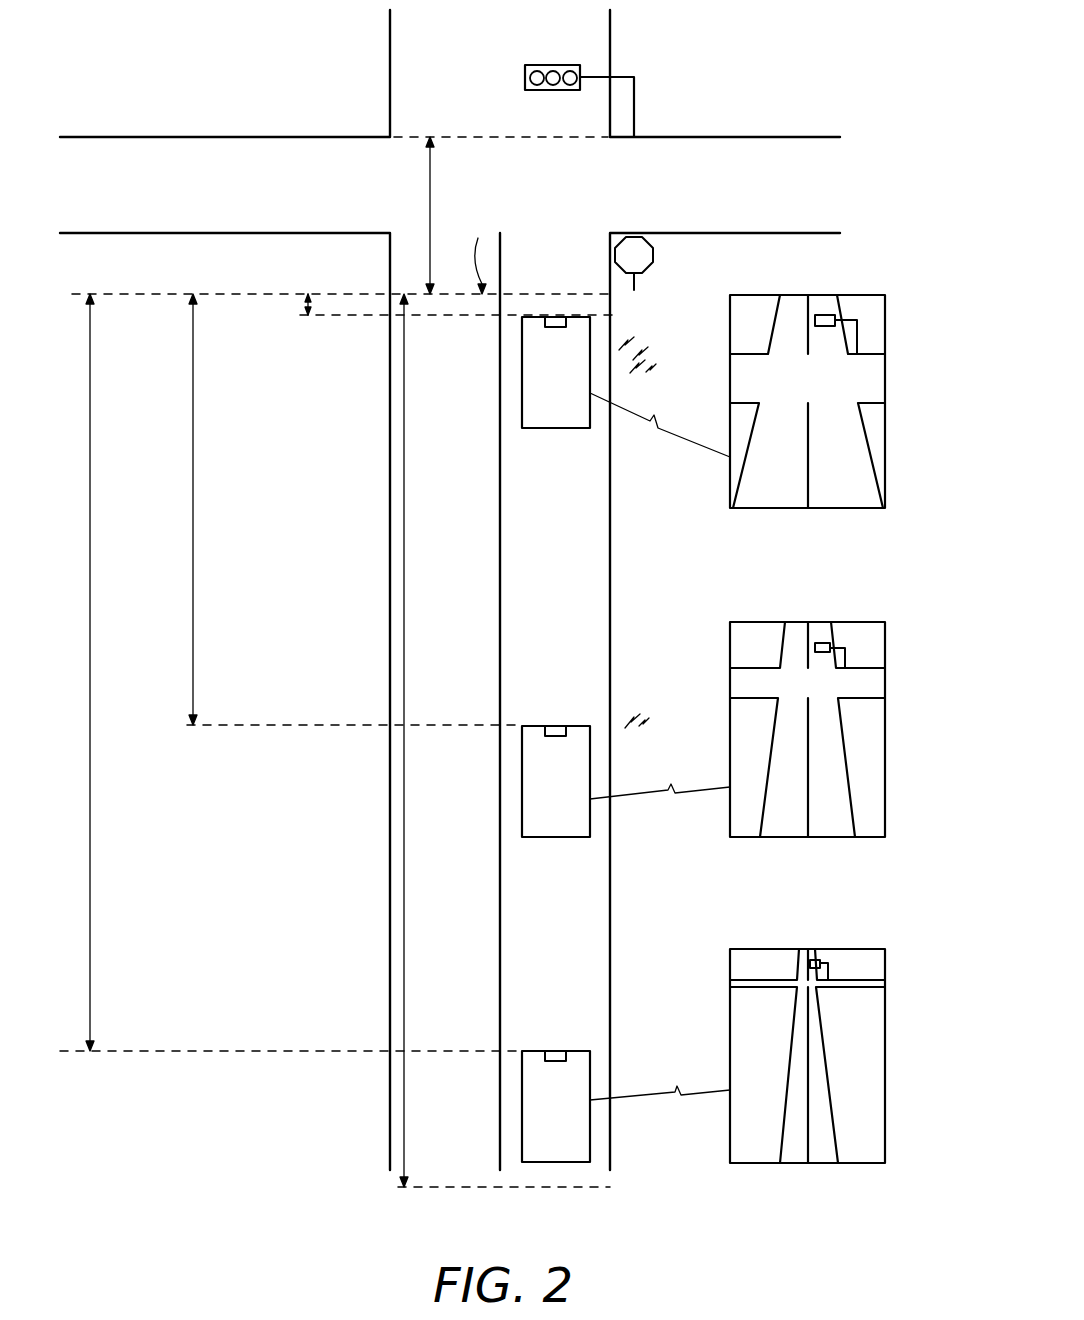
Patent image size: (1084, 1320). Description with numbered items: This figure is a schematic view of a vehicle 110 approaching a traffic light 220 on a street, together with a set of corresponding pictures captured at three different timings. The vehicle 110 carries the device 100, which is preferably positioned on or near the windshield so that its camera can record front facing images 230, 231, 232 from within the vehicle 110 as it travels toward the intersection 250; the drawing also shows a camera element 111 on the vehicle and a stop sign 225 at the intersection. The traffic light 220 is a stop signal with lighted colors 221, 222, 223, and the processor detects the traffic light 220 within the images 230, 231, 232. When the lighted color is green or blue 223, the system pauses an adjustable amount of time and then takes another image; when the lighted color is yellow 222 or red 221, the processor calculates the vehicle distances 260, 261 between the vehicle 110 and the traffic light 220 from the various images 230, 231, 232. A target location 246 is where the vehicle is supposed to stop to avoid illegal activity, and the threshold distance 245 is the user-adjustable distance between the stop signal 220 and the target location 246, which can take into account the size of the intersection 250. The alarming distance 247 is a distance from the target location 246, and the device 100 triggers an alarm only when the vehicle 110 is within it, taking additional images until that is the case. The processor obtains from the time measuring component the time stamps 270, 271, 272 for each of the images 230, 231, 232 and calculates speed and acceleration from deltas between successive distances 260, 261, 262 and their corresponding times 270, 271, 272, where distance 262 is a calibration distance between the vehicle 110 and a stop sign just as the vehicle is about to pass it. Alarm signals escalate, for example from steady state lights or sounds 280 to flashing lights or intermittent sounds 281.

The device 100 is at (556, 1062).
The vehicle 110 is at (565, 430).
The camera 111 is at (543, 1050).
The traffic light 220 is at (525, 72).
The red lighted color 221 is at (537, 70).
The yellow lighted color 222 is at (553, 88).
The green or blue lighted color 223 is at (572, 70).
The stop sign 225 is at (653, 252).
The first image 230 is at (566, 1048).
The second image 231 is at (566, 722).
The third image 232 is at (566, 314).
The threshold distance 245 is at (456, 215).
The target location 246 is at (472, 253).
The alarming distance 247 is at (425, 740).
The intersection 250 is at (587, 178).
The first vehicle distance 260 is at (69, 672).
The second vehicle distance 261 is at (172, 509).
The calibration distance 262 is at (302, 310).
The first time stamp 270 is at (660, 1106).
The second time stamp 271 is at (660, 806).
The third time stamp 272 is at (660, 428).
The steady state alarm signal 280 is at (647, 720).
The flashing or intermittent alarm signal 281 is at (647, 370).